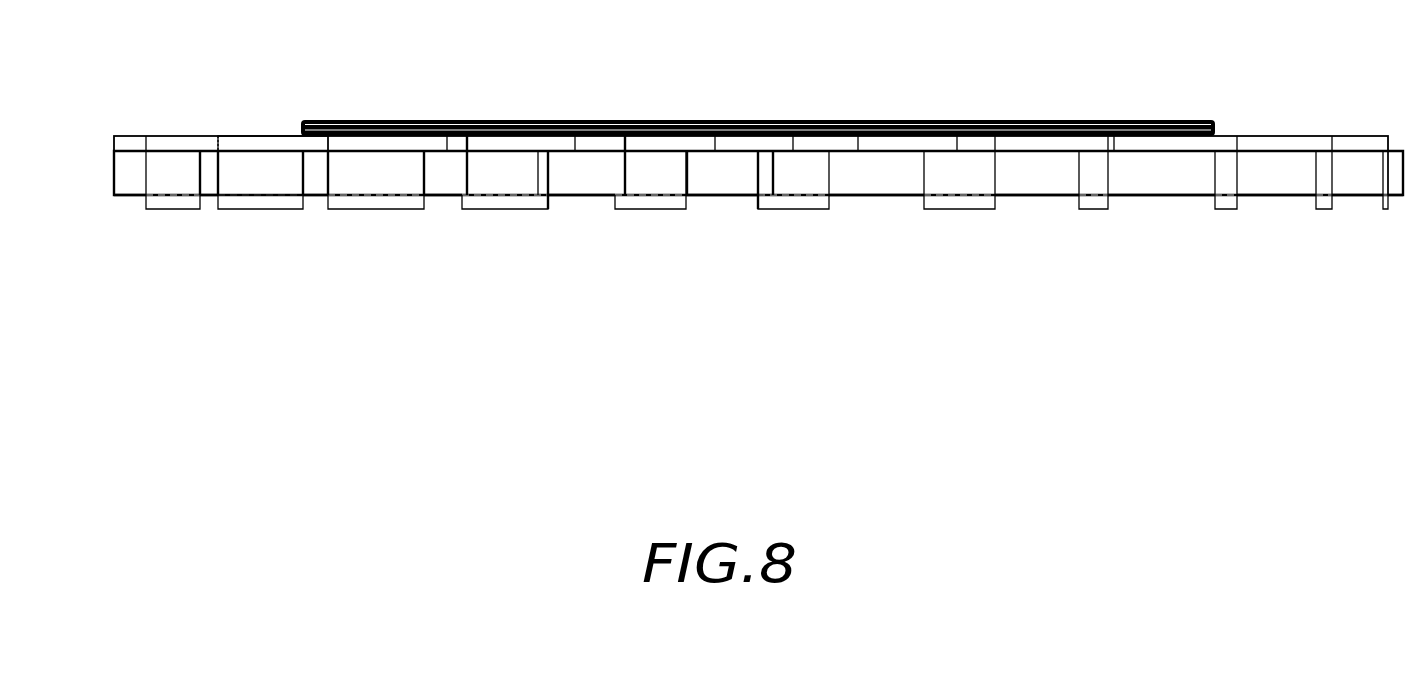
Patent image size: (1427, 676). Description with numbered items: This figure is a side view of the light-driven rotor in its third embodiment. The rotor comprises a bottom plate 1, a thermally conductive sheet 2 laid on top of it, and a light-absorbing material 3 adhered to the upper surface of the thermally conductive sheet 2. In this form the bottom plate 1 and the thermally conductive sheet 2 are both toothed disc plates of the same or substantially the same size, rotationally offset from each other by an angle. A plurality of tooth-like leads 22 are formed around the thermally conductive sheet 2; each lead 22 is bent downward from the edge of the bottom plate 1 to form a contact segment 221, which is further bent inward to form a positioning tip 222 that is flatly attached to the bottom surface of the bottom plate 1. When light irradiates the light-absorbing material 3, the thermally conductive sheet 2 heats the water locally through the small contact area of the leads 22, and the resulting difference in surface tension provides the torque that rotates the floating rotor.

The bottom plate 1 is at (125, 177).
The thermally conductive sheet 2 is at (132, 145).
The lead 22 is at (267, 134).
The contact segment 221 is at (252, 176).
The positioning tip 222 is at (266, 203).
The light-absorbing material 3 is at (374, 121).